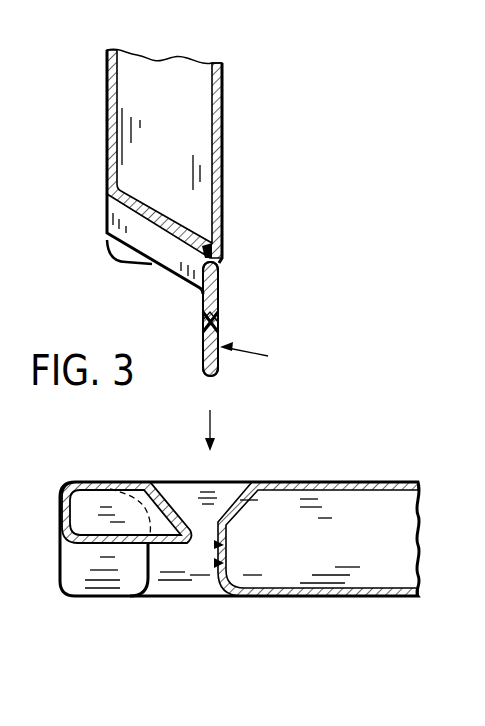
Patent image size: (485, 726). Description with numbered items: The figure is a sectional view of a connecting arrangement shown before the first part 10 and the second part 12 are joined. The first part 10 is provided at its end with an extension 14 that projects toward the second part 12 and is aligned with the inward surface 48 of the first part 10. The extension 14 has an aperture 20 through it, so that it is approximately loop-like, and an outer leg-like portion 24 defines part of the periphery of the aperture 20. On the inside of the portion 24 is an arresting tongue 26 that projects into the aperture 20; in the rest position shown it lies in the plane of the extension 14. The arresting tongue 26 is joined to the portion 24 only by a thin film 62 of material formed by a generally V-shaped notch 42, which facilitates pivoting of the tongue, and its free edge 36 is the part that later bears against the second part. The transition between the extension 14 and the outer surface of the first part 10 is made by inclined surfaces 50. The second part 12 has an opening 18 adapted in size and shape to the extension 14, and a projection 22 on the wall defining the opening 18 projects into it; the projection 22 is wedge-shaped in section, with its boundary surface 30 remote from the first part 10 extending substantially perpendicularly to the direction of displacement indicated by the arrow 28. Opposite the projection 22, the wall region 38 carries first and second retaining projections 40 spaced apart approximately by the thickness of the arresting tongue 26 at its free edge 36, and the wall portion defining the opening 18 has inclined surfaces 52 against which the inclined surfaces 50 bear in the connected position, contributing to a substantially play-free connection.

The first part 10 is at (195, 149).
The inward surface 48 is at (218, 128).
The inclined surfaces 50 is at (168, 271).
The aperture 20 is at (214, 258).
The free edge 36 is at (218, 266).
The arresting tongue 26 is at (215, 328).
The V-shaped notch 42 is at (216, 326).
The thin film 62 is at (205, 325).
The outer leg-like portion 24 is at (217, 370).
The extension 14 is at (259, 359).
The second part 12 is at (239, 556).
The retaining projections 40 is at (227, 563).
The inclined surfaces 52 is at (130, 497).
The projection 22 is at (155, 545).
The boundary surface 30 is at (177, 544).
The opening 18 is at (203, 587).
The wall region 38 is at (213, 551).
The arrow 28 is at (207, 426).